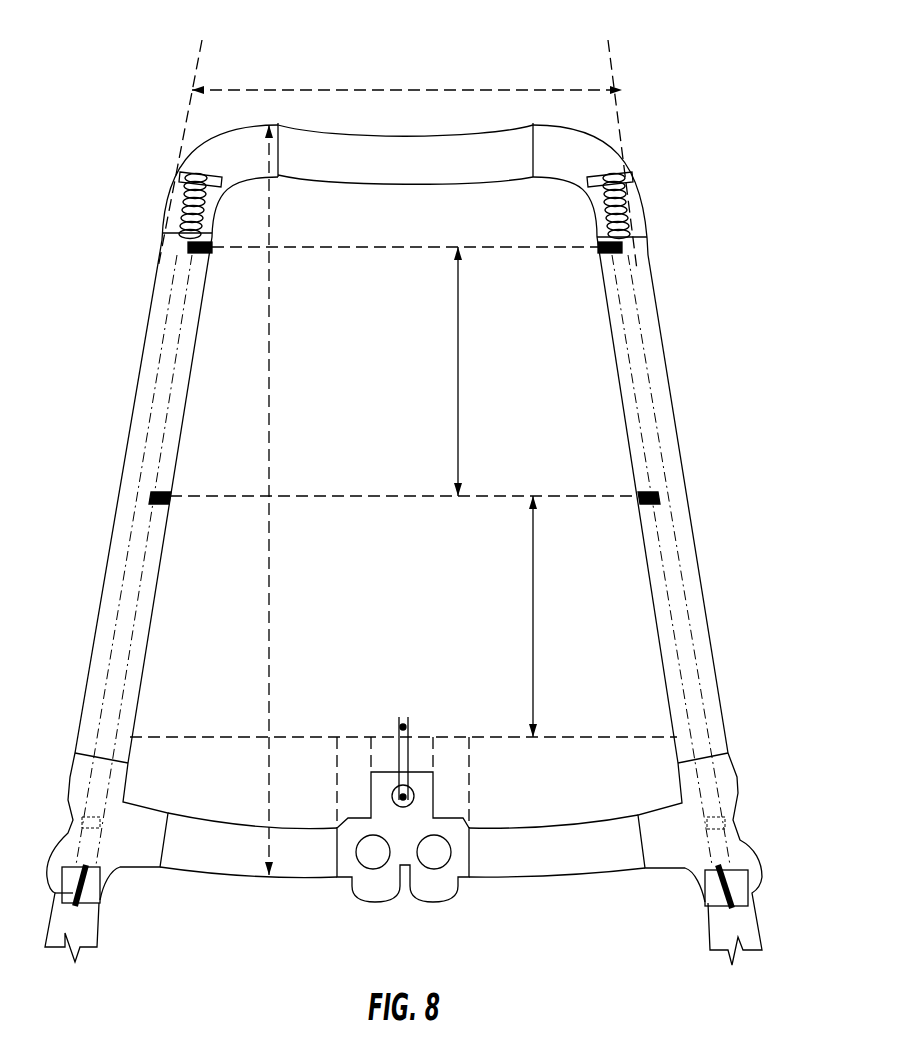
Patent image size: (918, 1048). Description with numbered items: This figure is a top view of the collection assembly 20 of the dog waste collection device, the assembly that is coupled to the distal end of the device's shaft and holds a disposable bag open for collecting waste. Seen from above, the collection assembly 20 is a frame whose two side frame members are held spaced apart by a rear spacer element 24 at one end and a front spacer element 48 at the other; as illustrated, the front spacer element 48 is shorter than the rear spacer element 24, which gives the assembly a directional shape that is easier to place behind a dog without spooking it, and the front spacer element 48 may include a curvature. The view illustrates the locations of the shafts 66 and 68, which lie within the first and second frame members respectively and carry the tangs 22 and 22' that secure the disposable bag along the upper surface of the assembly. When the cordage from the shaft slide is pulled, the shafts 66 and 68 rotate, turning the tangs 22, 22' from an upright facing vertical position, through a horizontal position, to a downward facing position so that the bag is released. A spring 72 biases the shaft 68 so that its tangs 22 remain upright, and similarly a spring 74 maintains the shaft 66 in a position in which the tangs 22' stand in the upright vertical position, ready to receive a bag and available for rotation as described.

The collection assembly 20 is at (406, 498).
The tang 22 is at (682, 507).
The tang 22' is at (123, 468).
The rear spacer element 24 is at (523, 878).
The front spacer element 48 is at (376, 137).
The shaft 66 is at (115, 657).
The shaft 68 is at (703, 688).
The spring 72 is at (630, 211).
The spring 74 is at (188, 203).